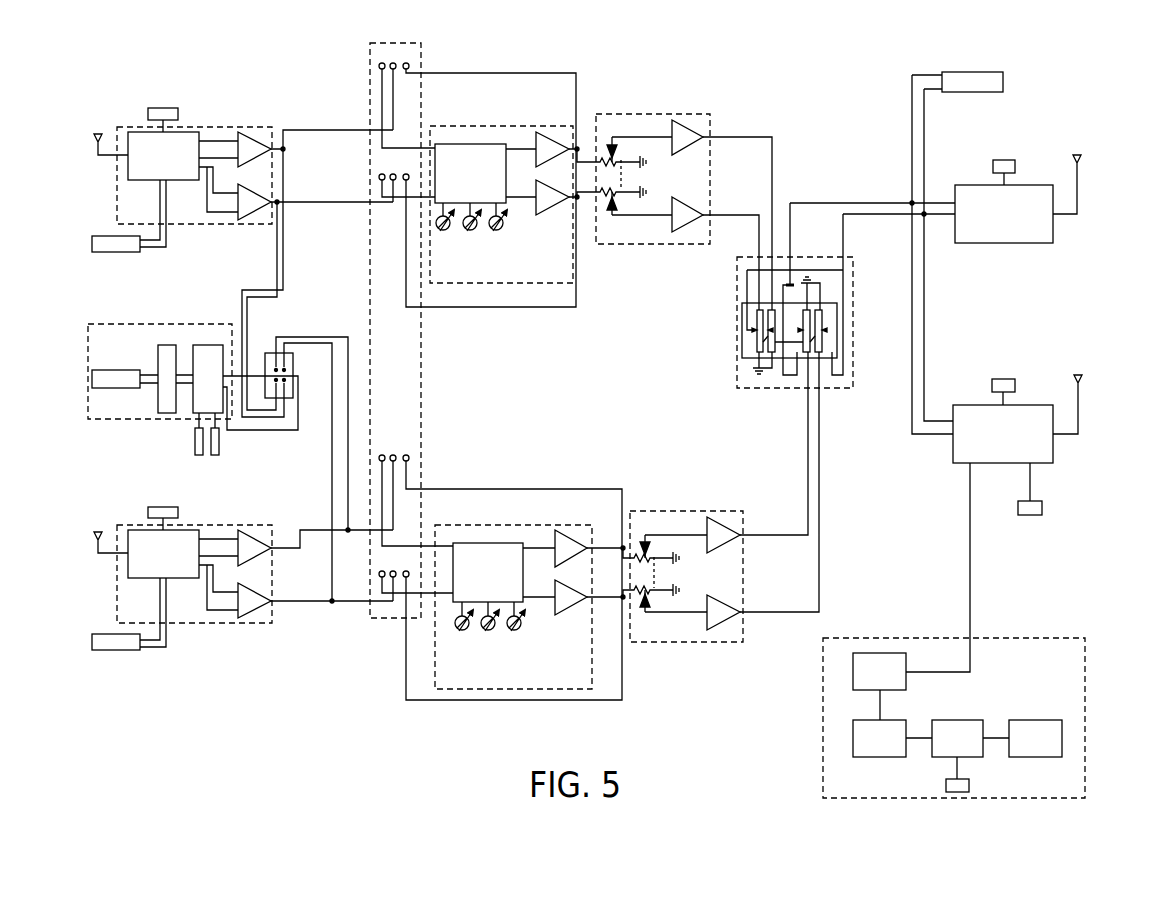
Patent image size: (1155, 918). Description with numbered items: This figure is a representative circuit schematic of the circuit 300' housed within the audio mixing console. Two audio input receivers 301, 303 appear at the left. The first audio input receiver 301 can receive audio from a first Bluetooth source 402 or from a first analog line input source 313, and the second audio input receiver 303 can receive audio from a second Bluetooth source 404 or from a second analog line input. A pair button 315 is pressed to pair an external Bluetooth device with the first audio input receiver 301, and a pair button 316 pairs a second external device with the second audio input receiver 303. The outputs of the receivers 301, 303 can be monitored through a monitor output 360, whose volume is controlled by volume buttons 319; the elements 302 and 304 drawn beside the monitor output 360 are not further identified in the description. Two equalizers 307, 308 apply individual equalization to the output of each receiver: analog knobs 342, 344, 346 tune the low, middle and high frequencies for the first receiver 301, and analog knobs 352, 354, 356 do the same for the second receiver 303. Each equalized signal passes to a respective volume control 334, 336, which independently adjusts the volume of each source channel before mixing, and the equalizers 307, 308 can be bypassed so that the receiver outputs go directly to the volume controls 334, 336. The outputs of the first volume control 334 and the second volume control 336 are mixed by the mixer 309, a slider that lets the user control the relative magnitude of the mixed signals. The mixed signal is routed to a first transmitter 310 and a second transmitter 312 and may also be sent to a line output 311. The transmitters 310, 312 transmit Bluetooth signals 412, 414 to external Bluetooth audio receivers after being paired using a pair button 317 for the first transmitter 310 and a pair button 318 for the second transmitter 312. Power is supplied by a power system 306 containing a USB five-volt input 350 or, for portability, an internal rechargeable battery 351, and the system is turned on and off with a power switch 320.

The circuit 300' is at (796, 103).
The first audio input receiver 301 is at (256, 127).
The mechanical switch assembly 302 is at (160, 356).
The second audio input receiver 303 is at (256, 525).
The switch 304 is at (268, 353).
The power system 306 is at (976, 718).
The equalizer 307 is at (501, 188).
The equalizer 308 is at (513, 591).
The mixer 309 is at (737, 365).
The first transmitter 310 is at (1053, 240).
The line output 311 is at (988, 72).
The second transmitter 312 is at (1053, 458).
The first analog line input source 313 is at (124, 236).
The pair button 315 is at (172, 108).
The pair button 316 is at (155, 507).
The pair button 317 is at (1010, 160).
The pair button 318 is at (1009, 379).
The volume buttons 319 is at (195, 440).
The power switch 320 is at (1042, 508).
The first volume control 334 is at (620, 114).
The second volume control 336 is at (663, 511).
The analog knob 342 is at (443, 232).
The analog knob 344 is at (470, 232).
The analog knob 346 is at (503, 226).
The USB 5V input 350 is at (1048, 720).
The internal rechargeable battery 351 is at (906, 685).
The analog knob 352 is at (462, 632).
The analog knob 354 is at (488, 632).
The analog knob 356 is at (521, 626).
The monitor output 360 is at (120, 359).
The first Bluetooth source 402 is at (98, 134).
The second Bluetooth source 404 is at (98, 532).
The Bluetooth signals 412 is at (1079, 155).
The Bluetooth signals 414 is at (1080, 375).